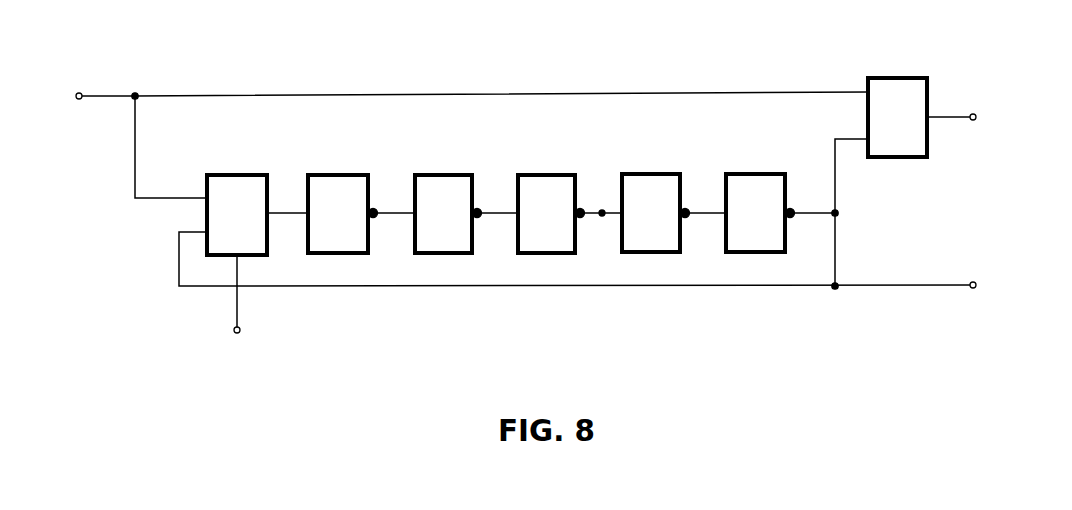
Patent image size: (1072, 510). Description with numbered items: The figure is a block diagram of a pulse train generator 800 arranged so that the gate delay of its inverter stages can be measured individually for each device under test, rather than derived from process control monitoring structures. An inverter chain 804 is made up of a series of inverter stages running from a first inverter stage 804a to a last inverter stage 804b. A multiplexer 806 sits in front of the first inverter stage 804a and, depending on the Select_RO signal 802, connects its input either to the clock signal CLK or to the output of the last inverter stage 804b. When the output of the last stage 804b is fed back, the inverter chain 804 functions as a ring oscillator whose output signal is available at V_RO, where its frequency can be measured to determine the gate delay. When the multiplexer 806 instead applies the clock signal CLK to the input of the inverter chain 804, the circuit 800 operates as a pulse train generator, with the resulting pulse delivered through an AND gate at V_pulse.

The pulse train generator 800 is at (252, 69).
The Select_RO signal 802 is at (237, 320).
The inverter chain 804 is at (568, 251).
The first inverter stage 804a is at (338, 214).
The last inverter stage 804b is at (755, 213).
The multiplexer 806 is at (237, 198).